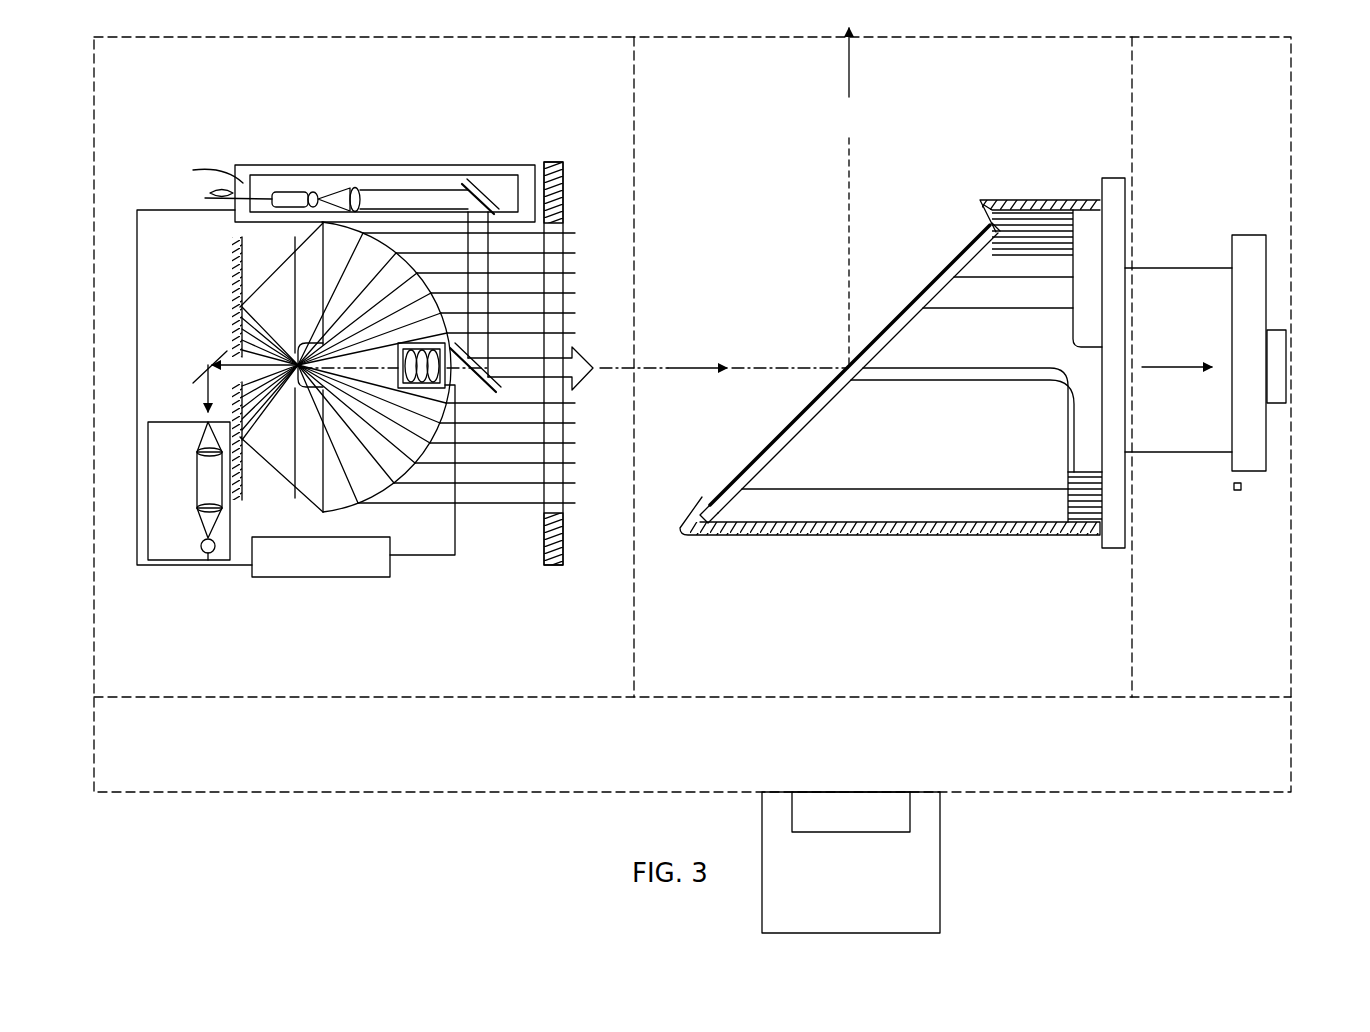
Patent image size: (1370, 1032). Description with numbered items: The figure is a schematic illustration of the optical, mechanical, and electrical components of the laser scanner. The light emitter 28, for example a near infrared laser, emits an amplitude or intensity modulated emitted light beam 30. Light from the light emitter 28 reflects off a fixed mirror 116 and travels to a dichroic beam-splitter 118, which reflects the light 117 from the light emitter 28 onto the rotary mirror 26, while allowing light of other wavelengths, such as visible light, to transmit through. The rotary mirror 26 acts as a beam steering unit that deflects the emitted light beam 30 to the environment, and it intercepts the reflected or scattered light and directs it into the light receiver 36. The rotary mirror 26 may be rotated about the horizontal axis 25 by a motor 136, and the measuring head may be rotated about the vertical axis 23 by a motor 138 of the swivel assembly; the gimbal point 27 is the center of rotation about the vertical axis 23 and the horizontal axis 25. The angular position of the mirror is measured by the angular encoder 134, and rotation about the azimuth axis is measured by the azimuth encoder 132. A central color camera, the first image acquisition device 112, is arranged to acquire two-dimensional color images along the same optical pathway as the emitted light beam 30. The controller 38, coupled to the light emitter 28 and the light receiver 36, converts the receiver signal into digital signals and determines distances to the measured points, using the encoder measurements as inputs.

The vertical axis 23 is at (852, 72).
The horizontal axis 25 is at (1152, 363).
The rotary mirror 26 is at (948, 258).
The gimbal point 27 is at (847, 365).
The light emitter 28 is at (297, 203).
The emitted light beam 30 is at (664, 366).
The light receiver 36 is at (168, 498).
The controller 38 is at (323, 579).
The first image acquisition device 112 is at (428, 392).
The fixed mirror 116 is at (483, 192).
The light 117 is at (480, 263).
The dichroic beam-splitter 118 is at (487, 385).
The azimuth encoder 132 is at (907, 817).
The angular encoder 134 is at (1287, 360).
The motor 136 is at (1255, 472).
The motor 138 is at (942, 915).